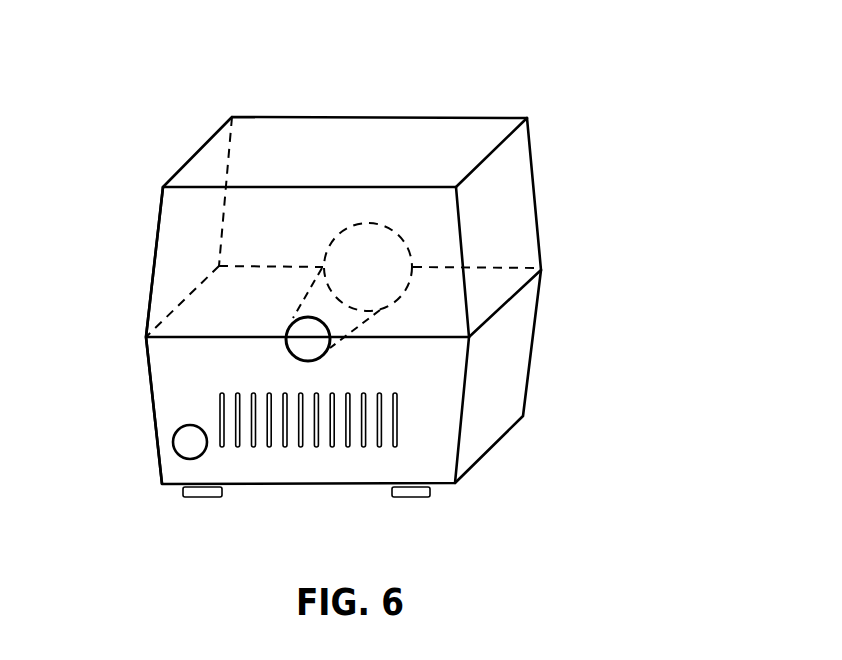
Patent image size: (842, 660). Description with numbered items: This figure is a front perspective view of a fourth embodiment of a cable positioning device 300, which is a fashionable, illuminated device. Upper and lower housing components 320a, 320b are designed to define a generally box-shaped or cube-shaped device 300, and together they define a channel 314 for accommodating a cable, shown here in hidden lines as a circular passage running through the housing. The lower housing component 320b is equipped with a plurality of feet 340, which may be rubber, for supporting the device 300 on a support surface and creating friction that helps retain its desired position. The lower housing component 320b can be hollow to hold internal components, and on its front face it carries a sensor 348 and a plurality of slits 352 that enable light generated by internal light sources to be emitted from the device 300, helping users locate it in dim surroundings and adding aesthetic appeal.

The cable positioning device 300 is at (438, 78).
The upper housing component 320a is at (180, 253).
The lower housing component 320b is at (180, 362).
The channel 314 is at (367, 323).
The sensor 348 is at (172, 444).
The slits 352 is at (399, 417).
The feet 340 is at (197, 496).